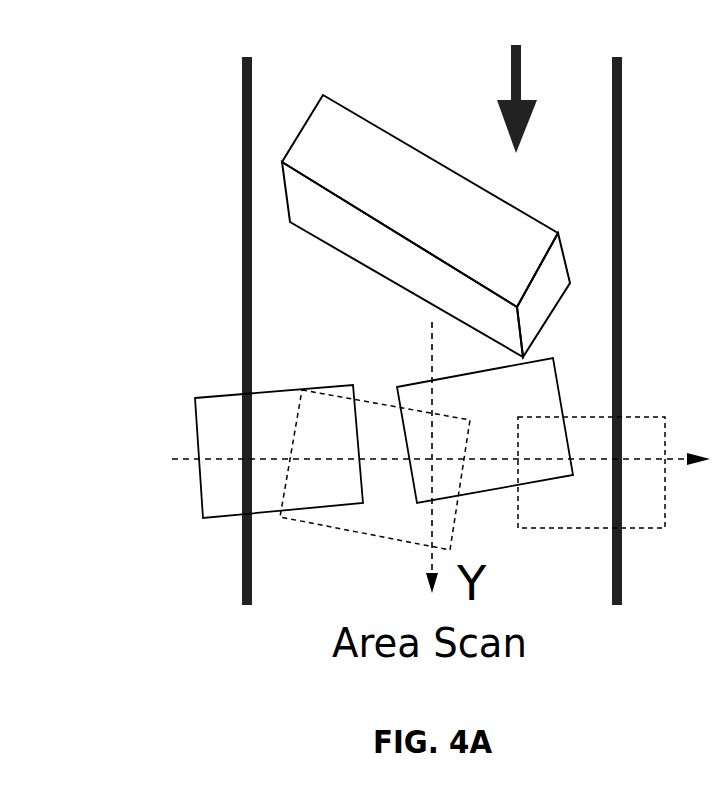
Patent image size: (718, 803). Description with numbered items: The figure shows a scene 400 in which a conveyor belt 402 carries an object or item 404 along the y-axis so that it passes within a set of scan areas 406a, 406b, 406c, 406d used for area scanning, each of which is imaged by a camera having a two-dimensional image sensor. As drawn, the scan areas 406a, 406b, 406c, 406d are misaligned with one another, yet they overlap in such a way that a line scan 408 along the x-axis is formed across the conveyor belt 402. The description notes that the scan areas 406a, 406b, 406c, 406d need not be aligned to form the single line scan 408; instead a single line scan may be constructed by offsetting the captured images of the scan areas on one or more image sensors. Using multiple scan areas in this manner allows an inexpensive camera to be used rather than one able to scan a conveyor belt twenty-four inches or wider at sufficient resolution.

The scene 400 is at (203, 61).
The conveyor belt 402 is at (237, 277).
The item 404 is at (355, 110).
The scan area 406a is at (208, 395).
The scan area 406b is at (370, 395).
The scan area 406c is at (558, 393).
The scan area 406d is at (664, 417).
The line scan 408 is at (186, 457).